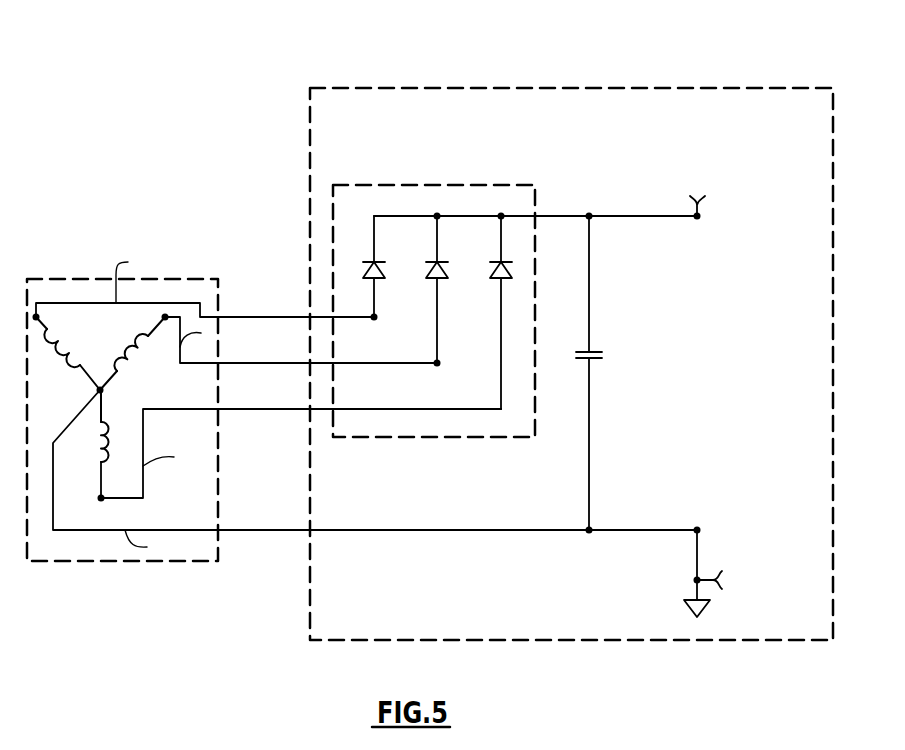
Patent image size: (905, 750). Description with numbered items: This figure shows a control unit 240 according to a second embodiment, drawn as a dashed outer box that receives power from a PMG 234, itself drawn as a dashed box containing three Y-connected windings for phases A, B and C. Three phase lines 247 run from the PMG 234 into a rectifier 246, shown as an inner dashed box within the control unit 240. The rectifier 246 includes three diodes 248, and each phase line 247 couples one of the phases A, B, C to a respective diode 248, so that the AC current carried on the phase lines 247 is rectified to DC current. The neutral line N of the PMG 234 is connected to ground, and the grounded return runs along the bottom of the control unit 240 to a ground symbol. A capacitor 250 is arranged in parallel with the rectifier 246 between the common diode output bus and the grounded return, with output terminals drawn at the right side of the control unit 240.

The PMG 234 is at (83, 271).
The control unit 240 is at (348, 80).
The rectifier 246 is at (414, 177).
The phase lines 247 is at (292, 409).
The diodes 248 is at (430, 262).
The capacitor 250 is at (590, 349).